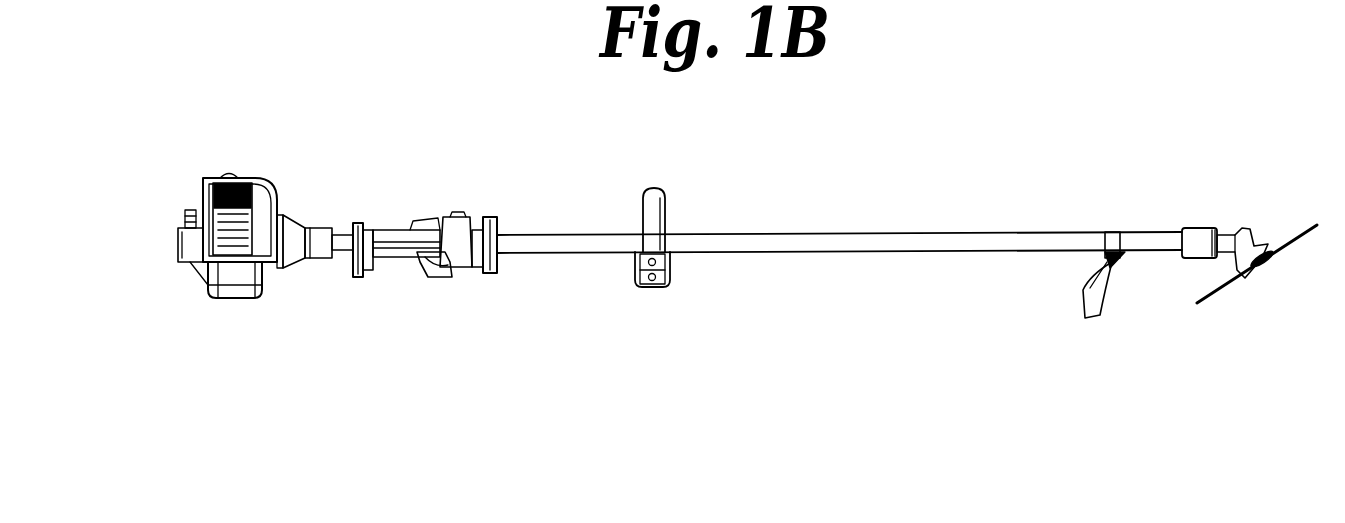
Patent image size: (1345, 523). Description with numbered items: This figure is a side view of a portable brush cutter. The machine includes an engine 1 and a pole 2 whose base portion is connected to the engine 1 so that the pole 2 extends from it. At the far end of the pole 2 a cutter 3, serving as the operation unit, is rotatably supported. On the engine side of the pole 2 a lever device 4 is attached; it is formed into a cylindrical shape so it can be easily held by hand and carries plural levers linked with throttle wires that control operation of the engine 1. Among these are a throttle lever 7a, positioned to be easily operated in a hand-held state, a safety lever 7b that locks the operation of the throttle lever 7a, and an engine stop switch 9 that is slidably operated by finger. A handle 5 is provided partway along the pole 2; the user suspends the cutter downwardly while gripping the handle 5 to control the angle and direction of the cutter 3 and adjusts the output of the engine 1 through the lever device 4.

The engine 1 is at (248, 178).
The pole 2 is at (961, 233).
The cutter 3 is at (1308, 230).
The lever device 4 is at (462, 197).
The handle 5 is at (653, 217).
The throttle lever 7a is at (442, 267).
The safety lever 7b is at (417, 222).
The engine stop switch 9 is at (478, 210).